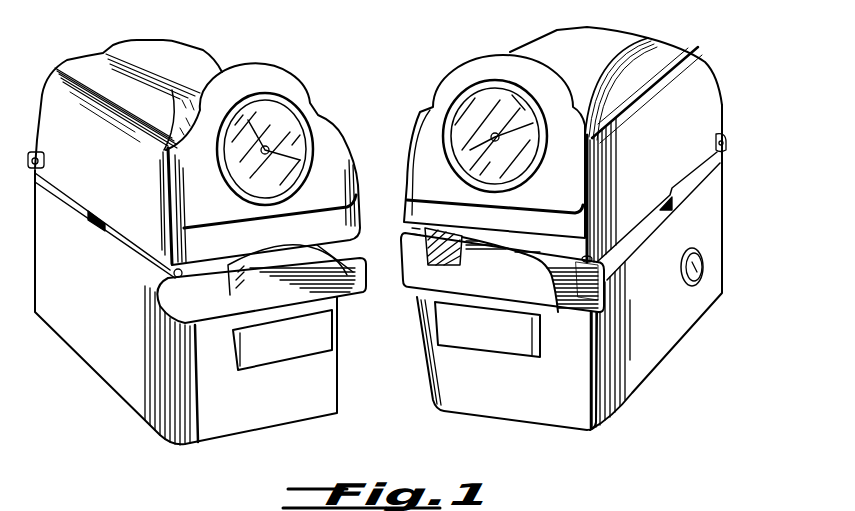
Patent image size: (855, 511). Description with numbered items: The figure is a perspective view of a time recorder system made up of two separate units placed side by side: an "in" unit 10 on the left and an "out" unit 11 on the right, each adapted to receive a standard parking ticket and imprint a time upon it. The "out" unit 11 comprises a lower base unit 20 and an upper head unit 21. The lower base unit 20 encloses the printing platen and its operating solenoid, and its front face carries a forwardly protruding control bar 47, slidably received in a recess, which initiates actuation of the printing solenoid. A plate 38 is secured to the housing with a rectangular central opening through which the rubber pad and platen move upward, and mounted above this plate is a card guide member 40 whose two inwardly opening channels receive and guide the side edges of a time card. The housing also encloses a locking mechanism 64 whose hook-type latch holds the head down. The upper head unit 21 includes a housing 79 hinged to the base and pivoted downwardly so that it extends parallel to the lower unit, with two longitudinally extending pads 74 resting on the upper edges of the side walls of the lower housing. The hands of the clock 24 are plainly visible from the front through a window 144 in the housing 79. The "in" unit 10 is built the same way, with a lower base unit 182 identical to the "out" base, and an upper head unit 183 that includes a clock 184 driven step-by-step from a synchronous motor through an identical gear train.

The "in" unit 10 is at (108, 357).
The "out" unit 11 is at (639, 356).
The lower base unit 20 is at (573, 386).
The upper head unit 21 is at (705, 60).
The clock 24 is at (480, 113).
The plate 38 is at (603, 292).
The card guide member 40 is at (471, 252).
The control bar 47 is at (445, 342).
The locking mechanism 64 is at (697, 283).
The longitudinally extending pads 74 is at (697, 177).
The housing 79 is at (697, 120).
The window 144 is at (460, 160).
The lower base unit 182 is at (222, 405).
The upper head unit 183 is at (334, 150).
The clock 184 is at (278, 128).